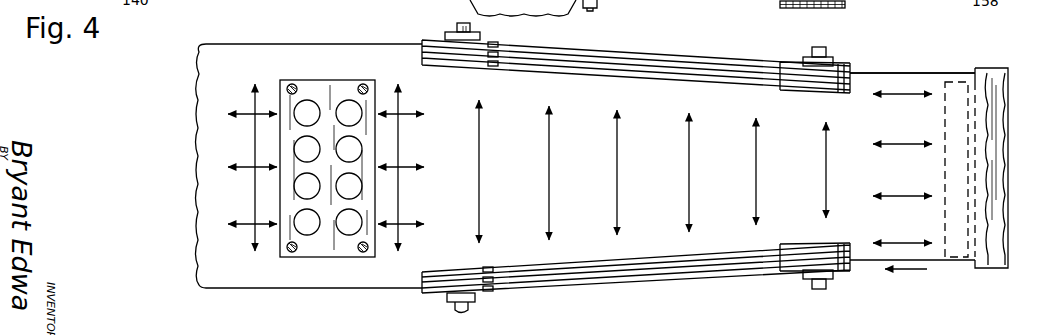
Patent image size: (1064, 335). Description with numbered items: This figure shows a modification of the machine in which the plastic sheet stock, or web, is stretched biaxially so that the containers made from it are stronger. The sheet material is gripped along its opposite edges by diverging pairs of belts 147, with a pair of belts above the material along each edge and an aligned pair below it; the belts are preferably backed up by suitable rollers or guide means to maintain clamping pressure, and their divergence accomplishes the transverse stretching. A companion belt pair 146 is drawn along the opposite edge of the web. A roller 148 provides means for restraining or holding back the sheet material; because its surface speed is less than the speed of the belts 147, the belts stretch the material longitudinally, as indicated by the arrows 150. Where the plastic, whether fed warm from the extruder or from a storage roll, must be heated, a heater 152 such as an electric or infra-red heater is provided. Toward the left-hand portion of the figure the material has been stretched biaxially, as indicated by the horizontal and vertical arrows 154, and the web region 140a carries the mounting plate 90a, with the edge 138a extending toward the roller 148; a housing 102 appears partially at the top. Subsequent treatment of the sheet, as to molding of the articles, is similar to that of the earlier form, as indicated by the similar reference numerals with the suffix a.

The frame 140a is at (230, 60).
The mounting plate 90a is at (325, 87).
The belts 147 is at (672, 66).
The lower guide bar 146 is at (700, 258).
The vertical movement arrows 154 is at (825, 170).
The arrows 150 is at (912, 97).
The frame edge 138a is at (893, 85).
The heater 152 is at (952, 251).
The roller 148 is at (1003, 79).
The housing 102 is at (570, 10).